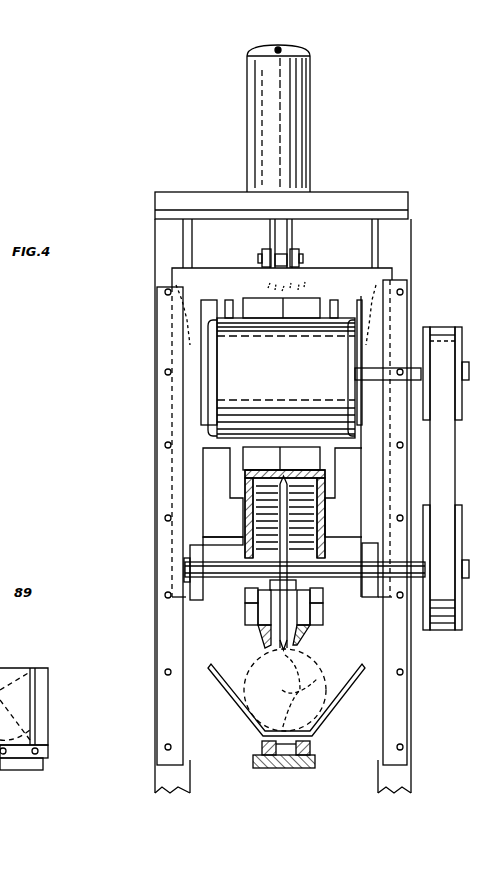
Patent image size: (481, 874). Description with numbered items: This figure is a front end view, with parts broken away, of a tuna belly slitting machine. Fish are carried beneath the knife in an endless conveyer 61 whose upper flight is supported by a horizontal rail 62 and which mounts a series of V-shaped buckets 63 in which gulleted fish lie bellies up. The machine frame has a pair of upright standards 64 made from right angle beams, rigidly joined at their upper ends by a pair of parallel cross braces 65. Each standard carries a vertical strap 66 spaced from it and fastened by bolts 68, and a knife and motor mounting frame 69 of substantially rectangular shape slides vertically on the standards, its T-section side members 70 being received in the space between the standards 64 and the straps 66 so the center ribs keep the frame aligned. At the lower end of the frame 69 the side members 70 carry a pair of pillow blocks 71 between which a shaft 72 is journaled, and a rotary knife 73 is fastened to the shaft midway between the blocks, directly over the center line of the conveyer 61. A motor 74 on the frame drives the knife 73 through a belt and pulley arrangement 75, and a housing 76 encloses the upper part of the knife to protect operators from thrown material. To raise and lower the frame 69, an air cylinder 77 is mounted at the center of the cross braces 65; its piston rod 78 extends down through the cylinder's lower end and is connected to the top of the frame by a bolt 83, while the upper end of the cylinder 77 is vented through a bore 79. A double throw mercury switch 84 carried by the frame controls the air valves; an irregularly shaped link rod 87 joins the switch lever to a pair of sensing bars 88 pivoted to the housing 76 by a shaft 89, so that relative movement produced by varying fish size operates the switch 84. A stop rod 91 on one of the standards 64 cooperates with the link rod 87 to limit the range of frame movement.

The endless conveyer 61 is at (312, 745).
The rail 62 is at (316, 762).
The V-shaped buckets 63 is at (213, 668).
The upright standards 64 is at (163, 263).
The cross braces 65 is at (367, 197).
The strap 66 is at (160, 328).
The bolts 68 is at (164, 372).
The knife and motor mounting frame 69 is at (224, 266).
The side members 70 is at (203, 494).
The pillow blocks 71 is at (203, 552).
The shaft 72 is at (230, 579).
The rotary knife 73 is at (288, 511).
The motor 74 is at (302, 372).
The belt and pulley arrangement 75 is at (430, 470).
The housing 76 is at (321, 527).
The air cylinder 77 is at (311, 112).
The piston rod 78 is at (288, 244).
The bore 79 is at (283, 48).
The bolt 83 is at (300, 259).
The double throw mercury switch 84 is at (270, 234).
The link rod 87 is at (283, 310).
The sensing bars 88 is at (258, 632).
The shaft 89 is at (323, 594).
The stop rod 91 is at (212, 536).